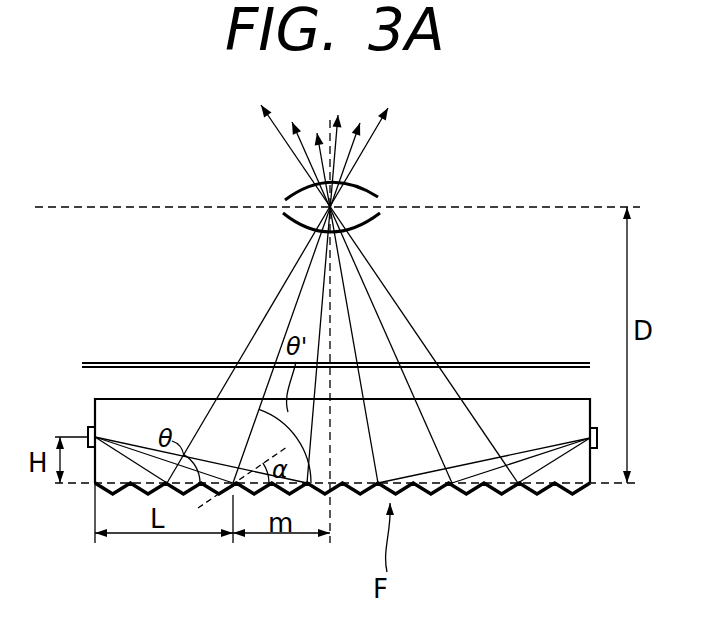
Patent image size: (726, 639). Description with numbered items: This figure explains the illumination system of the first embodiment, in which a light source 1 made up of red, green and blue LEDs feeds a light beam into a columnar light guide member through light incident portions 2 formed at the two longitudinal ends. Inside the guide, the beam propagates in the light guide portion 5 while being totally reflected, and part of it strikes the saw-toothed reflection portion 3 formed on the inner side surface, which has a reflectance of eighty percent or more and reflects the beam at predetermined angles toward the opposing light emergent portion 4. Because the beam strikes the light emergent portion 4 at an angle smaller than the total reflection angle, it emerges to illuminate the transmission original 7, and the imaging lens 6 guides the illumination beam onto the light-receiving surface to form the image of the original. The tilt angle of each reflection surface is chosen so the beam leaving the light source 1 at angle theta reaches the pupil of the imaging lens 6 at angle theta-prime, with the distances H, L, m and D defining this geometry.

The light source 1 is at (88, 435).
The light incident portion 2 is at (93, 402).
The saw-toothed reflection portion 3 is at (483, 495).
The light emergent portion 4 is at (502, 399).
The light guide portion 5 is at (168, 408).
The imaging lens 6 is at (380, 217).
The transmission original 7 is at (125, 362).